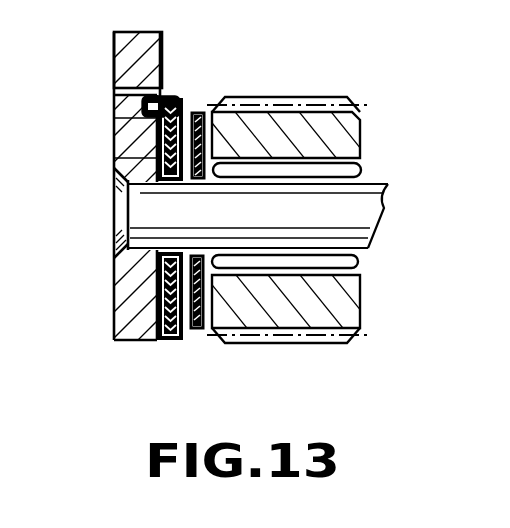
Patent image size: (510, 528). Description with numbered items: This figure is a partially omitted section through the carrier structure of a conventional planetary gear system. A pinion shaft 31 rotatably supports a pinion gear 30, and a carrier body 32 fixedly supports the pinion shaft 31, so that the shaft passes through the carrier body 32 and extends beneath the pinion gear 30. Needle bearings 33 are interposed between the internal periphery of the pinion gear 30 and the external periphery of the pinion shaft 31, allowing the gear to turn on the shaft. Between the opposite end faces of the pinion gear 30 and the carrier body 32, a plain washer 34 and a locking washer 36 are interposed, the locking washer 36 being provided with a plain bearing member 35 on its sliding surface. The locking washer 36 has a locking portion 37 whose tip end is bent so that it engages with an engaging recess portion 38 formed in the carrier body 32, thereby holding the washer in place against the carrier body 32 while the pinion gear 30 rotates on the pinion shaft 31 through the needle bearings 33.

The pinion gear 30 is at (310, 107).
The pinion shaft 31 is at (365, 212).
The carrier body 32 is at (123, 310).
The needle bearings 33 is at (353, 170).
The plain washer 34 is at (200, 110).
The plain bearing member 35 is at (180, 108).
The locking washer 36 is at (153, 153).
The locking portion 37 is at (142, 102).
The engaging recess portion 38 is at (140, 73).